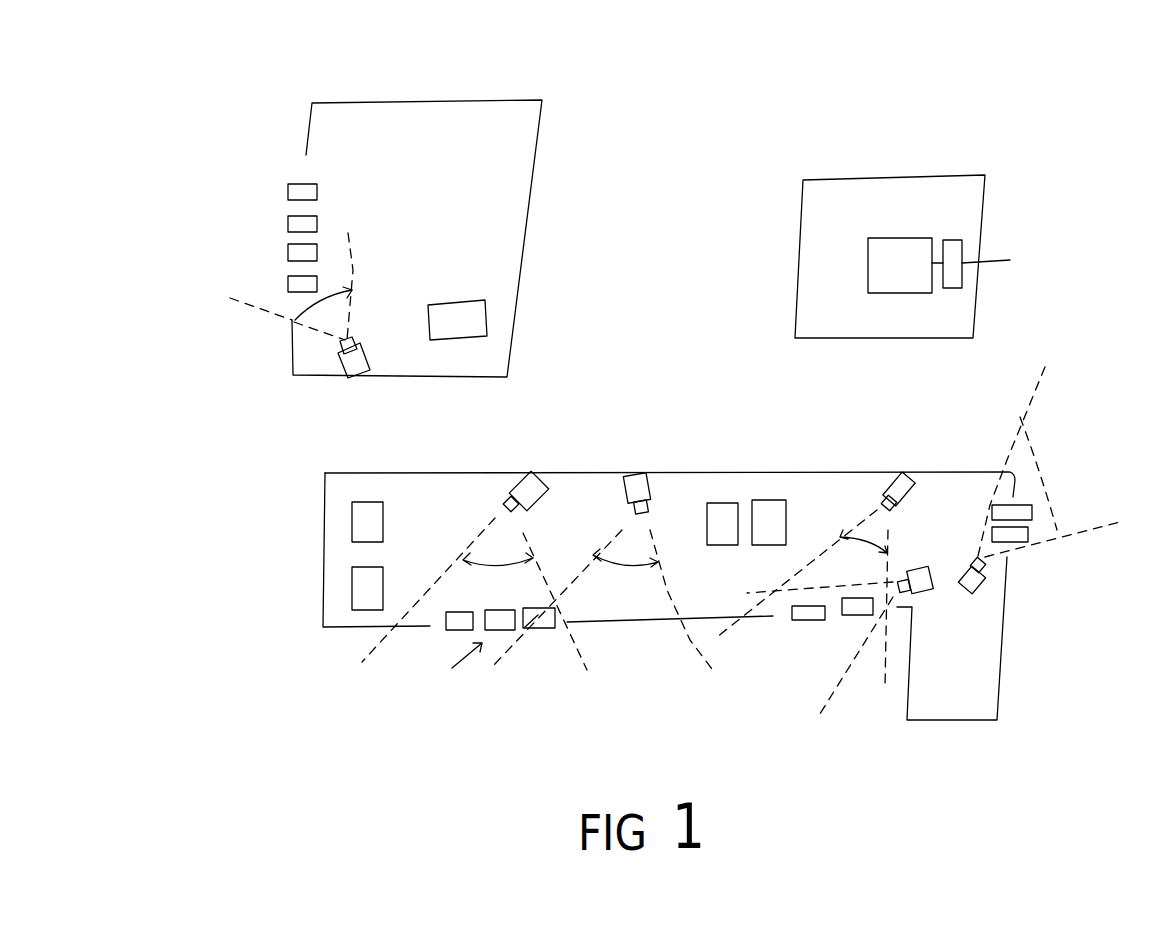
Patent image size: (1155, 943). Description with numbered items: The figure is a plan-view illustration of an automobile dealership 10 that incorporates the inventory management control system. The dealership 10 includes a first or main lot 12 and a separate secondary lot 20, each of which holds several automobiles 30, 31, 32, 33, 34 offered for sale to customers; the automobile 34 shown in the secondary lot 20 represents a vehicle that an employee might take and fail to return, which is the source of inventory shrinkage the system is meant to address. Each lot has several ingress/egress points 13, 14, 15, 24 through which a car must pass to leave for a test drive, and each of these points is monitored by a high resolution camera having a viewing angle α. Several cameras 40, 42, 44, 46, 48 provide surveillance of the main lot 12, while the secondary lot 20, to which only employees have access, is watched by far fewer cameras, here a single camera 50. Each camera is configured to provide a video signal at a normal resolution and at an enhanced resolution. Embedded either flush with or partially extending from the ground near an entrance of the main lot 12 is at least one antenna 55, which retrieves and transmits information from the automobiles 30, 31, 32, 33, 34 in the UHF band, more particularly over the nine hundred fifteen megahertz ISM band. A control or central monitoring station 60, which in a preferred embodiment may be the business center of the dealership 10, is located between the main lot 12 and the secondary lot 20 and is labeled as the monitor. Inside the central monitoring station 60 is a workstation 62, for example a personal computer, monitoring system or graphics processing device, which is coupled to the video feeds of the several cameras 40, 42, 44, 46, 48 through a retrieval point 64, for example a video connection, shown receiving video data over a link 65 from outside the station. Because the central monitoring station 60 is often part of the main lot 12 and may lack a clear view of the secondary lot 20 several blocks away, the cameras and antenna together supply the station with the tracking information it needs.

The automobile dealership 10 is at (995, 57).
The main lot 12 is at (748, 473).
The ingress/egress point 13 is at (454, 675).
The ingress/egress point 14 is at (818, 641).
The ingress/egress point 15 is at (1062, 521).
The secondary lot 20 is at (528, 227).
The ingress/egress point 24 is at (256, 237).
The automobile 30 is at (383, 518).
The automobile 31 is at (383, 585).
The automobile 32 is at (715, 547).
The automobile 33 is at (787, 518).
The automobile 34 is at (450, 303).
The camera 40 is at (540, 500).
The camera 42 is at (650, 487).
The camera 44 is at (905, 487).
The camera 46 is at (925, 593).
The camera 48 is at (975, 597).
The camera 50 is at (366, 356).
The antenna 55 is at (497, 610).
The central monitoring station 60 is at (940, 177).
The workstation 62 is at (868, 265).
The retrieval point 64 is at (955, 240).
The video data link 65 is at (990, 265).